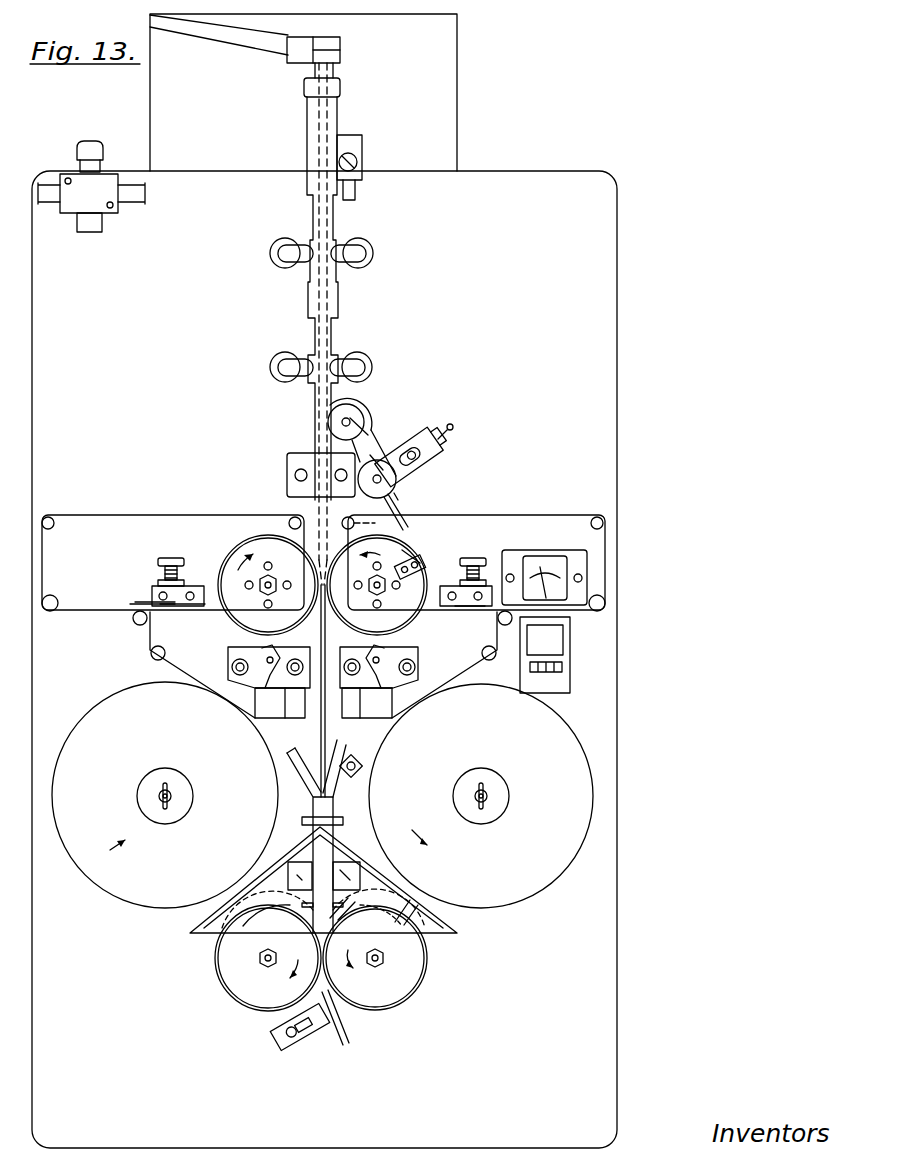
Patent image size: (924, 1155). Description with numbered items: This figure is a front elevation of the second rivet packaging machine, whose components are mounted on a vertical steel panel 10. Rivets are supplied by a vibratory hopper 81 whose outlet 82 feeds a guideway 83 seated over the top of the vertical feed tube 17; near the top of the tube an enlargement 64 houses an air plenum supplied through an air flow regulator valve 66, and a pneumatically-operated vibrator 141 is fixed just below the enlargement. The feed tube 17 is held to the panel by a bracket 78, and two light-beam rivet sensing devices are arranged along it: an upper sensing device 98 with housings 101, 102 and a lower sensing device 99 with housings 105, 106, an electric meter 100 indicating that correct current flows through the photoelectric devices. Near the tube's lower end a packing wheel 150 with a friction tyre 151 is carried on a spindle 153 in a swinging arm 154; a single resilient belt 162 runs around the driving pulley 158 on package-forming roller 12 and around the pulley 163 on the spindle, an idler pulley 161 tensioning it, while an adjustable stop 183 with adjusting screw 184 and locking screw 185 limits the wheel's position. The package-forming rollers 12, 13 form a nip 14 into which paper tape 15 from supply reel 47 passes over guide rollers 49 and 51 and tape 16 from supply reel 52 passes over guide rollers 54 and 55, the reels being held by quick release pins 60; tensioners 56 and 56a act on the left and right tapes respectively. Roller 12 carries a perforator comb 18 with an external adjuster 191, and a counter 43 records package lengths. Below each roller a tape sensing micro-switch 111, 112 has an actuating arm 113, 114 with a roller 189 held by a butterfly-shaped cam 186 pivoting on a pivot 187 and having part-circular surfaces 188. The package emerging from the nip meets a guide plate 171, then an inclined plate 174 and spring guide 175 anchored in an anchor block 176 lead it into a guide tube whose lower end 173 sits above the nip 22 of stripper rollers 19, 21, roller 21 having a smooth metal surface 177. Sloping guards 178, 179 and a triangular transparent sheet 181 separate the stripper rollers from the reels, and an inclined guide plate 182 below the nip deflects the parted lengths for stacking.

The steel panel 10 is at (500, 193).
The package-forming roller 12 is at (427, 549).
The package-forming roller 13 is at (225, 562).
The nip 14 is at (377, 585).
The paper tape 15 is at (173, 544).
The tape 16 is at (473, 545).
The feed tube 17 is at (342, 330).
The perforator comb 18 is at (430, 570).
The stripper roller 19 is at (410, 978).
The stripper roller 21 is at (247, 982).
The nip 22 is at (304, 949).
The electro-magnetic counter 43 is at (570, 676).
The supply reel 47 is at (298, 780).
The tape guide roller 49 is at (52, 520).
The tape guide roller 51 is at (292, 518).
The supply reel 52 is at (557, 868).
The guide roller 54 is at (597, 517).
The guide roller 55 is at (358, 509).
The tensioning means 56 is at (157, 574).
The second tape tensioner 56a is at (492, 565).
The quick release pin 60 is at (158, 803).
The enlargement 64 is at (341, 88).
The air flow regulator valve 66 is at (112, 213).
The bracket 78 is at (290, 462).
The vibratory hopper 81 is at (414, 101).
The hopper outlet 82 is at (240, 38).
The guideway 83 is at (342, 50).
The upper rivet sensing device 98 is at (304, 233).
The lower rivet sensing device 99 is at (293, 348).
The electric meter 100 is at (535, 566).
The housing 101 is at (360, 252).
The housing 102 is at (289, 252).
The housing 105 is at (358, 366).
The housing 106 is at (289, 366).
The micro-switch 111 is at (388, 722).
The micro-switch 112 is at (262, 708).
The actuating arm 113 is at (372, 705).
The actuating arm 114 is at (276, 690).
The pneumatically-operated vibrator 141 is at (362, 148).
The packing wheel 150 is at (340, 401).
The tyre 151 is at (362, 402).
The spindle 153 is at (352, 422).
The swinging arm 154 is at (386, 444).
The driving pulley 158 is at (420, 556).
The idler pulley 161 is at (412, 474).
The belt 162 is at (398, 508).
The pulley 163 is at (332, 415).
The guide plate 171 is at (278, 840).
The lower end of guide tube 173 is at (374, 916).
The inclined plate 174 is at (300, 780).
The spring guide 175 is at (351, 776).
The anchor block 176 is at (371, 774).
The smooth metal surface 177 is at (225, 985).
The sloping guard 178 is at (326, 917).
The sloping guard 179 is at (210, 918).
The transparent plastic sheet 181 is at (212, 928).
The inclined guide plate 182 is at (338, 1040).
The adjustable stop 183 is at (420, 418).
The adjusting screw 184 is at (431, 425).
The locking screw 185 is at (417, 437).
The butterfly-shaped cam 186 is at (235, 668).
The pivot 187 is at (260, 656).
The part-circular surface 188 is at (262, 643).
The roller 189 is at (238, 700).
The external adjuster 191 is at (485, 565).